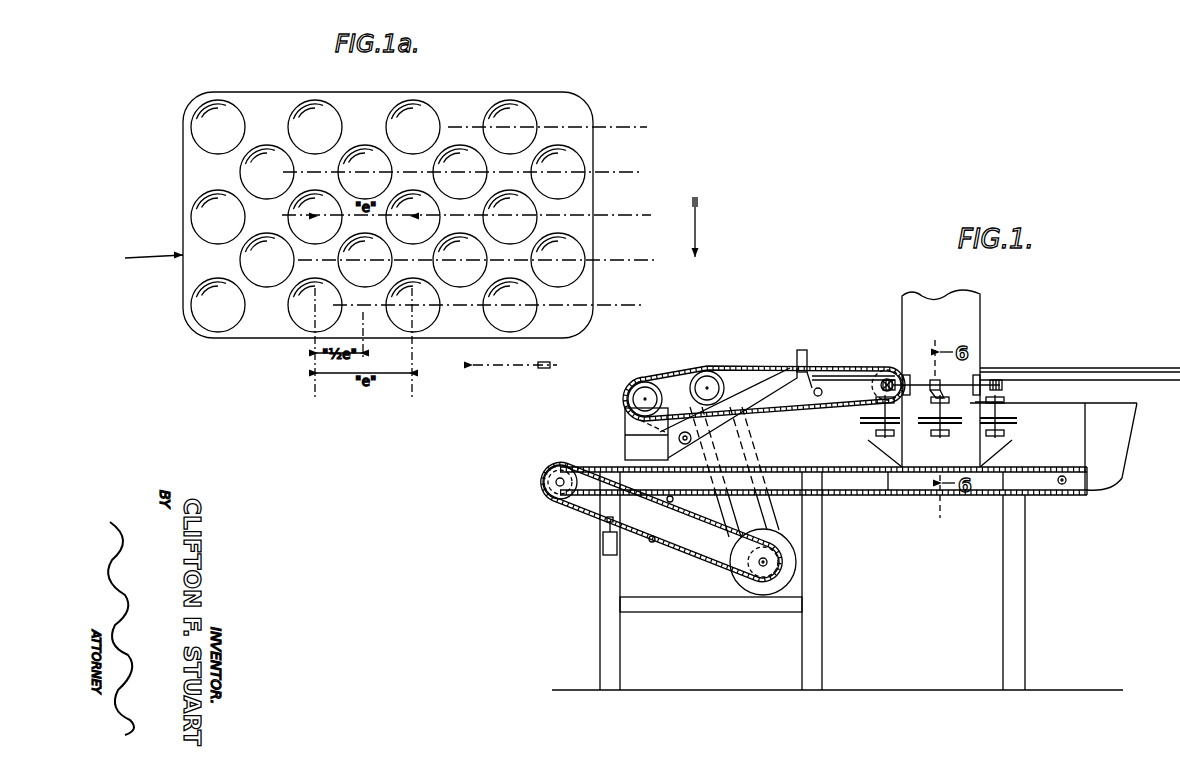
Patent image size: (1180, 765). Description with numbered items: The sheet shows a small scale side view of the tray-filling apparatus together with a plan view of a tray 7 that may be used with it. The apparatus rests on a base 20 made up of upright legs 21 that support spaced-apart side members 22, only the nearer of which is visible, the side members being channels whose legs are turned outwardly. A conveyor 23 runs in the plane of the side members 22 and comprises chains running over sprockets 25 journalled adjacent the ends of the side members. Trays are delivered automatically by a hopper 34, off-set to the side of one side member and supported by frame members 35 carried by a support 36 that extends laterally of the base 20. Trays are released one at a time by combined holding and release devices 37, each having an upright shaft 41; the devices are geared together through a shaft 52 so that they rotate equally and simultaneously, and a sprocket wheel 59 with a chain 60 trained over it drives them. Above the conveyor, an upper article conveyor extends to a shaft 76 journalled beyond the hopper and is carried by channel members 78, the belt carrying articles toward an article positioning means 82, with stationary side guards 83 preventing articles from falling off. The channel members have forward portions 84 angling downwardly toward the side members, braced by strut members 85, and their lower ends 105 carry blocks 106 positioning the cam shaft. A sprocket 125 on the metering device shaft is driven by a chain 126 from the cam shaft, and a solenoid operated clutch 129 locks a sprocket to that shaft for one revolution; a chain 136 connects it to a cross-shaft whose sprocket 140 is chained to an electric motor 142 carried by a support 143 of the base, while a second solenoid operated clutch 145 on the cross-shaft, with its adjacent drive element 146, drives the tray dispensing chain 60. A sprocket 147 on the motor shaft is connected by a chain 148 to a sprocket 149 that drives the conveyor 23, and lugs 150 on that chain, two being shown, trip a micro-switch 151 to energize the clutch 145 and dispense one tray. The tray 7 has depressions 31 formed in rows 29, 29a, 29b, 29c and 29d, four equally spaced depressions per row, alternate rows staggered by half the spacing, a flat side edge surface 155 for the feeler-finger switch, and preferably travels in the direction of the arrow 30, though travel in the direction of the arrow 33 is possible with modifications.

In FIG. 1A, the tray 7 is at (143, 260).
In FIG. 1A, the row of depressions 29 is at (643, 305).
In FIG. 1A, the row of depressions 29a is at (657, 260).
In FIG. 1A, the row of depressions 29b is at (651, 215).
In FIG. 1A, the row of depressions 29c is at (653, 150).
In FIG. 1A, the row of depressions 29d is at (660, 106).
In FIG. 1A, the arrow 30 is at (697, 228).
In FIG. 1A, the depressions 31 is at (307, 112).
In FIG. 1A, the arrow 33 is at (507, 368).
In FIG. 1A, the flat side edge surface 155 is at (183, 178).
In FIG. 1, the base 20 is at (1030, 588).
In FIG. 1, the upright legs 21 is at (600, 585).
In FIG. 1, the side members 22 is at (1036, 481).
In FIG. 1, the conveyor 23 is at (957, 500).
In FIG. 1, the sprockets 25 is at (553, 466).
In FIG. 1, the hopper 34 is at (962, 314).
In FIG. 1, the frame members 35 is at (888, 452).
In FIG. 1, the support 36 is at (918, 483).
In FIG. 1, the combined holding and release devices 37 is at (942, 422).
In FIG. 1, the upright shaft 41 is at (860, 420).
In FIG. 1, the shaft 52 is at (921, 380).
In FIG. 1, the sprocket wheel 59 is at (880, 374).
In FIG. 1, the chain 60 is at (842, 372).
In FIG. 1, the shaft 76 is at (816, 388).
In FIG. 1, the channel members 78 is at (826, 388).
In FIG. 1, the article positioning means 82 is at (765, 364).
In FIG. 1, the stationary side guards 83 is at (1092, 368).
In FIG. 1, the forward portions of side members 84 is at (768, 410).
In FIG. 1, the strut members 85 is at (758, 445).
In FIG. 1, the lower ends of side members 105 is at (625, 448).
In FIG. 1, the blocks 106 is at (625, 421).
In FIG. 1, the sprocket 125 is at (661, 445).
In FIG. 1, the chain 126 is at (684, 374).
In FIG. 1, the solenoid operated clutch 129 is at (636, 392).
In FIG. 1, the chain 136 is at (668, 376).
In FIG. 1, the sprocket 140 is at (800, 522).
In FIG. 1, the electric motor 142 is at (792, 551).
In FIG. 1, the support 143 is at (703, 612).
In FIG. 1, the solenoid operated clutch 145 is at (706, 374).
In FIG. 1, the belt 146 is at (740, 366).
In FIG. 1, the sprocket 147 is at (764, 572).
In FIG. 1, the chain 148 is at (685, 548).
In FIG. 1, the sprocket 149 is at (545, 492).
In FIG. 1, the lugs 150 is at (674, 502).
In FIG. 1, the micro-switch 151 is at (603, 546).